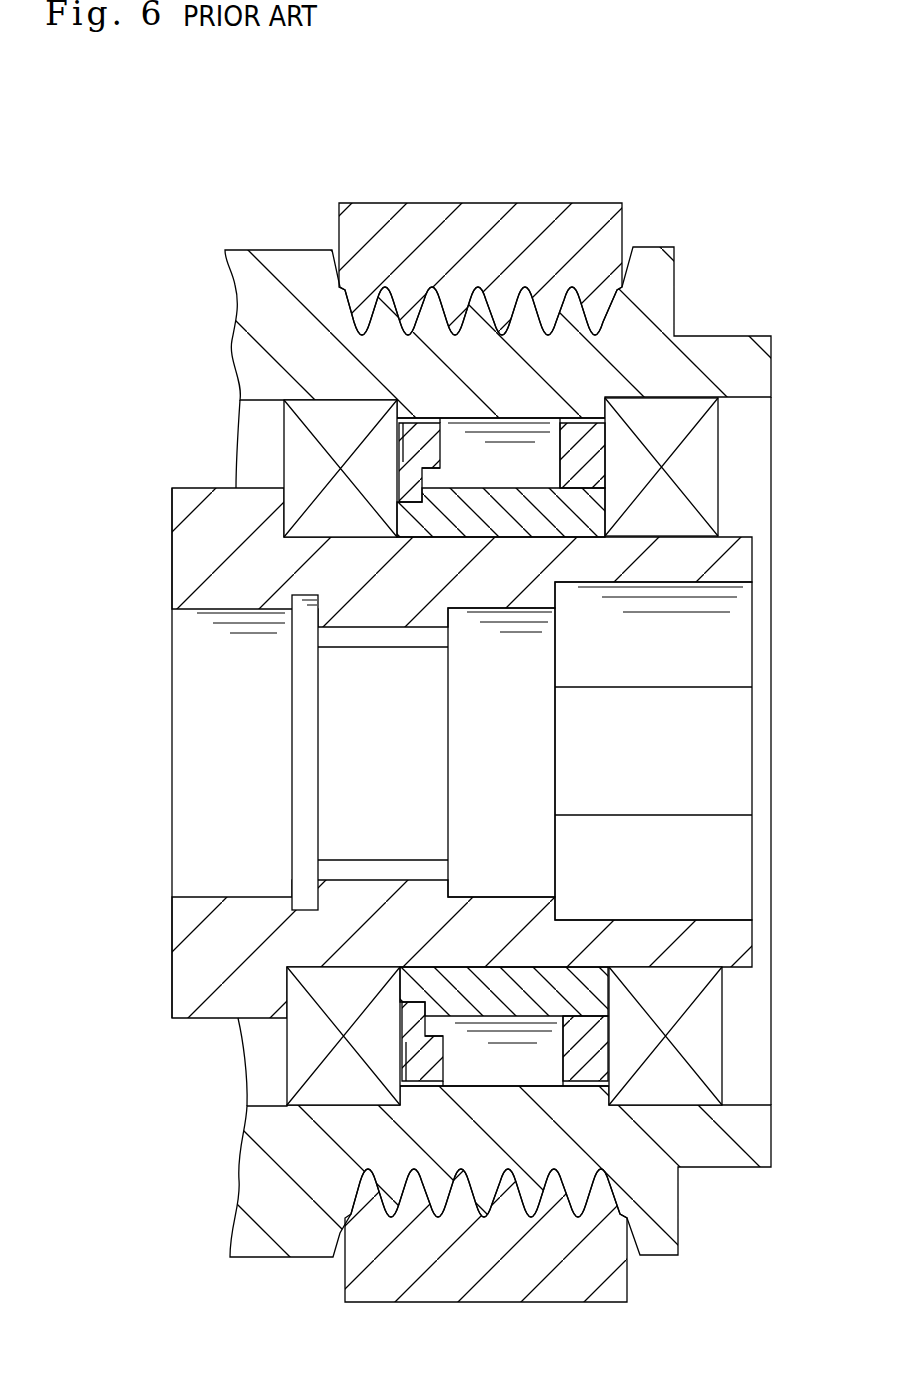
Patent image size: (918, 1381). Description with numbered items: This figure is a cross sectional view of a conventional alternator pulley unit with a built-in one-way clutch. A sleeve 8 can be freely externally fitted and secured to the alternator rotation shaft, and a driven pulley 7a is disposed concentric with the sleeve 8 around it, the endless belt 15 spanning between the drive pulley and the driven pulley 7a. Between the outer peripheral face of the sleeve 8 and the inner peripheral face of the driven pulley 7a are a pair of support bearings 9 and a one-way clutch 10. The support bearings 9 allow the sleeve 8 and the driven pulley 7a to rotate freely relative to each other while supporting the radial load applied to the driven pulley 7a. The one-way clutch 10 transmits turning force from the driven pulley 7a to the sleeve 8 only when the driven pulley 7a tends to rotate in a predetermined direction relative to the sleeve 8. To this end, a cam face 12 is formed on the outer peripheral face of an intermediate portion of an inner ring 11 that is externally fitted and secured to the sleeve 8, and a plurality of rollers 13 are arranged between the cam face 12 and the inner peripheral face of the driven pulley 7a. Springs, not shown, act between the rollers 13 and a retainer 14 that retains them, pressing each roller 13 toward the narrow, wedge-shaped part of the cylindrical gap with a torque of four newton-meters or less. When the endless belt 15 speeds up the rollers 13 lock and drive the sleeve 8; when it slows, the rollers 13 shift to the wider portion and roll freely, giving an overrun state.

The driven pulley 7a is at (248, 1233).
The sleeve 8 is at (185, 927).
The support bearings 9 is at (287, 1035).
The one-way clutch 10 is at (462, 433).
The inner ring 11 is at (530, 983).
The cam face 12 is at (488, 1018).
The rollers 13 is at (503, 432).
The retainer 14 is at (592, 1040).
The endless belt 15 is at (438, 203).